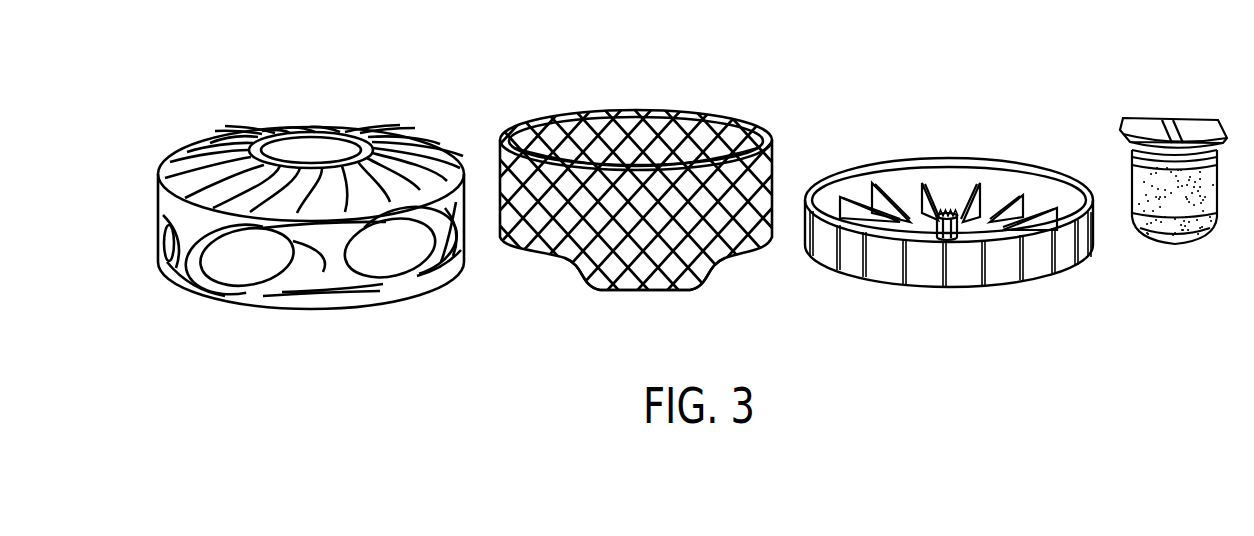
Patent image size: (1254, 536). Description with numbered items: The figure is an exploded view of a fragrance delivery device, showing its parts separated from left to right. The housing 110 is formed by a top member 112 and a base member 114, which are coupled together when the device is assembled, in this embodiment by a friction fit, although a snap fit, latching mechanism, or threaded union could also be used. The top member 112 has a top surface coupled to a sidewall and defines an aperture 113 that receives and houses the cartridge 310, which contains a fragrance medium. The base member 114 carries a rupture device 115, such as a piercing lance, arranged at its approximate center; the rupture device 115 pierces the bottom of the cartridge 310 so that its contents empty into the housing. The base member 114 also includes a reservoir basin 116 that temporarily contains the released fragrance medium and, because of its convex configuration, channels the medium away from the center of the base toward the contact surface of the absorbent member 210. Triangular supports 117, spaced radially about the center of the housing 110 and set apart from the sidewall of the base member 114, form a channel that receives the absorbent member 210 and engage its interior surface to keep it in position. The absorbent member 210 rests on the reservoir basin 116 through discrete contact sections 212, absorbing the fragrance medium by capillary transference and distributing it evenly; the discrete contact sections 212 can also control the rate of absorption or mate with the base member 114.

The housing 110 is at (301, 76).
The top member 112 is at (222, 142).
The aperture 113 is at (318, 148).
The base member 114 is at (882, 268).
The rupture device 115 is at (943, 237).
The reservoir basin 116 is at (990, 235).
The supports 117 is at (940, 214).
The absorbent member 210 is at (627, 125).
The discrete contact sections 212 is at (632, 292).
The cartridge 310 is at (1147, 123).